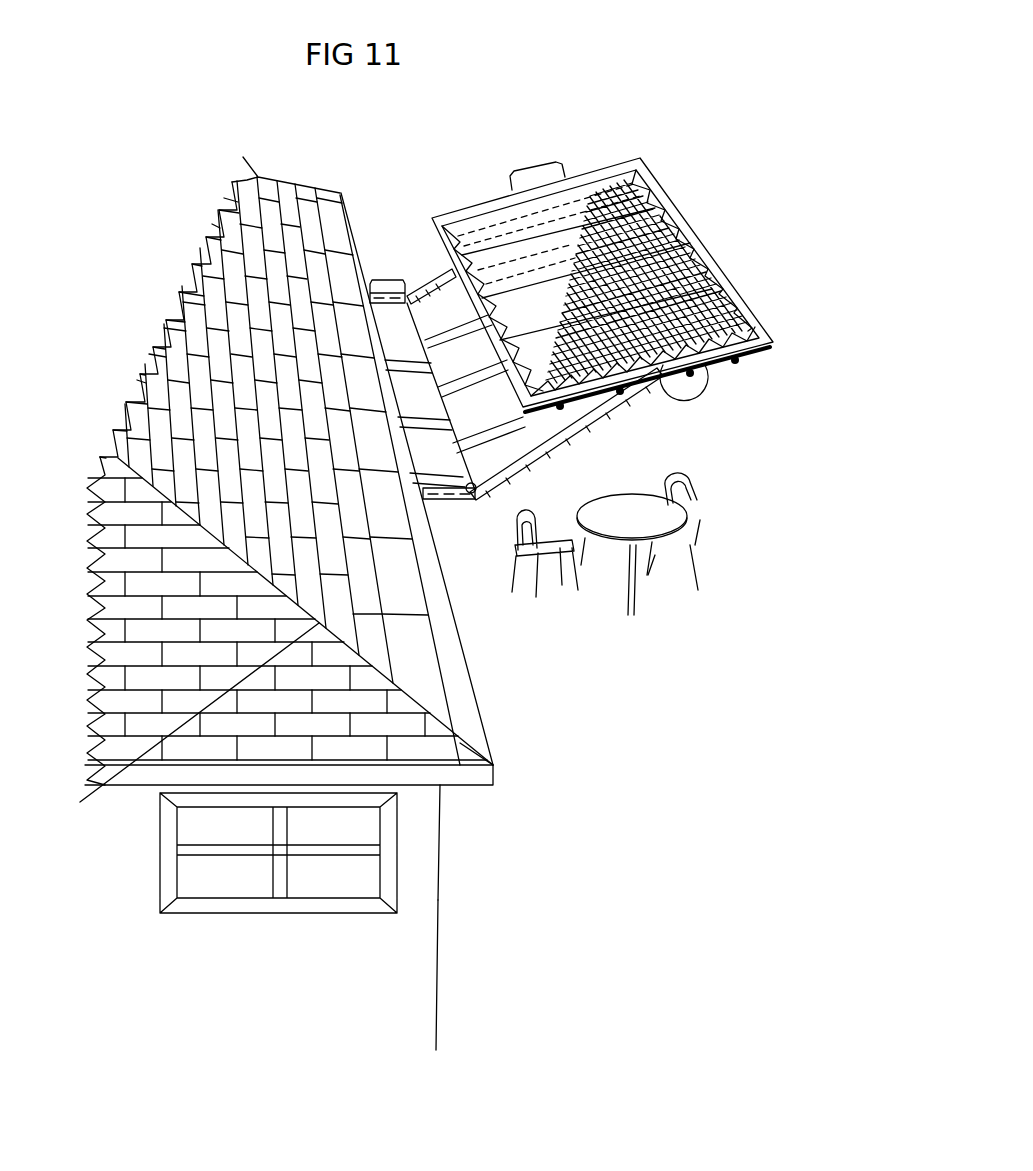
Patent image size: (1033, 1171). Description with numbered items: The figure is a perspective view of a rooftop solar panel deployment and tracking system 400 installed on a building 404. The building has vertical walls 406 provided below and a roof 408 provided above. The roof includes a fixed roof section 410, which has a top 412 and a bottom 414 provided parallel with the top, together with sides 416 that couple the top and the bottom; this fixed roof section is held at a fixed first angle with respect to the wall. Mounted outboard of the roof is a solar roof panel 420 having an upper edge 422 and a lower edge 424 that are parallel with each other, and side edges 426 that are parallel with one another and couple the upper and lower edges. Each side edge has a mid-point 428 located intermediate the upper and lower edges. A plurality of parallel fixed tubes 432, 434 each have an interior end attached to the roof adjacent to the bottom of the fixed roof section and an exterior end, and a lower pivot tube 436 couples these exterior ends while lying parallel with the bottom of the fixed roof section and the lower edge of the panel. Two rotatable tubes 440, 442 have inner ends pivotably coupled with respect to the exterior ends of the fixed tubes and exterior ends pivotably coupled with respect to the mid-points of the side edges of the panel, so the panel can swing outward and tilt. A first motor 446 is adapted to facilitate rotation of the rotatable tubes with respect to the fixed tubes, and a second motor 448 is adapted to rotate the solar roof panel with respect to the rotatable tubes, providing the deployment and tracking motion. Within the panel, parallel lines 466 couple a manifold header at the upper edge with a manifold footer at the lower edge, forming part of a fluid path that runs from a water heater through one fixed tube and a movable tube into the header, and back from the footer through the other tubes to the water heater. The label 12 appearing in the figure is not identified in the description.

The rooftop solar panel deployment and tracking system 400 is at (693, 113).
The building 404 is at (427, 858).
The vertical walls 406 is at (440, 908).
The roof 408 is at (173, 360).
The fixed roof section 410 is at (463, 697).
The top 412 is at (138, 413).
The bottom 414 is at (460, 653).
The sides 416 is at (192, 737).
The solar roof panel 420 is at (662, 185).
The upper edge 422 is at (445, 258).
The lower edge 424 is at (687, 233).
The side edges 426 is at (606, 170).
The mid-point 428 is at (660, 378).
The fixed tube 432 is at (372, 296).
The fixed tube 434 is at (445, 502).
The lower pivot tube 436 is at (477, 457).
The rotatable tube 440 is at (450, 278).
The rotatable tube 442 is at (570, 437).
The first motor 446 is at (390, 280).
The second motor 448 is at (535, 173).
The parallel line 466 is at (498, 237).
The patio area 12 is at (695, 403).